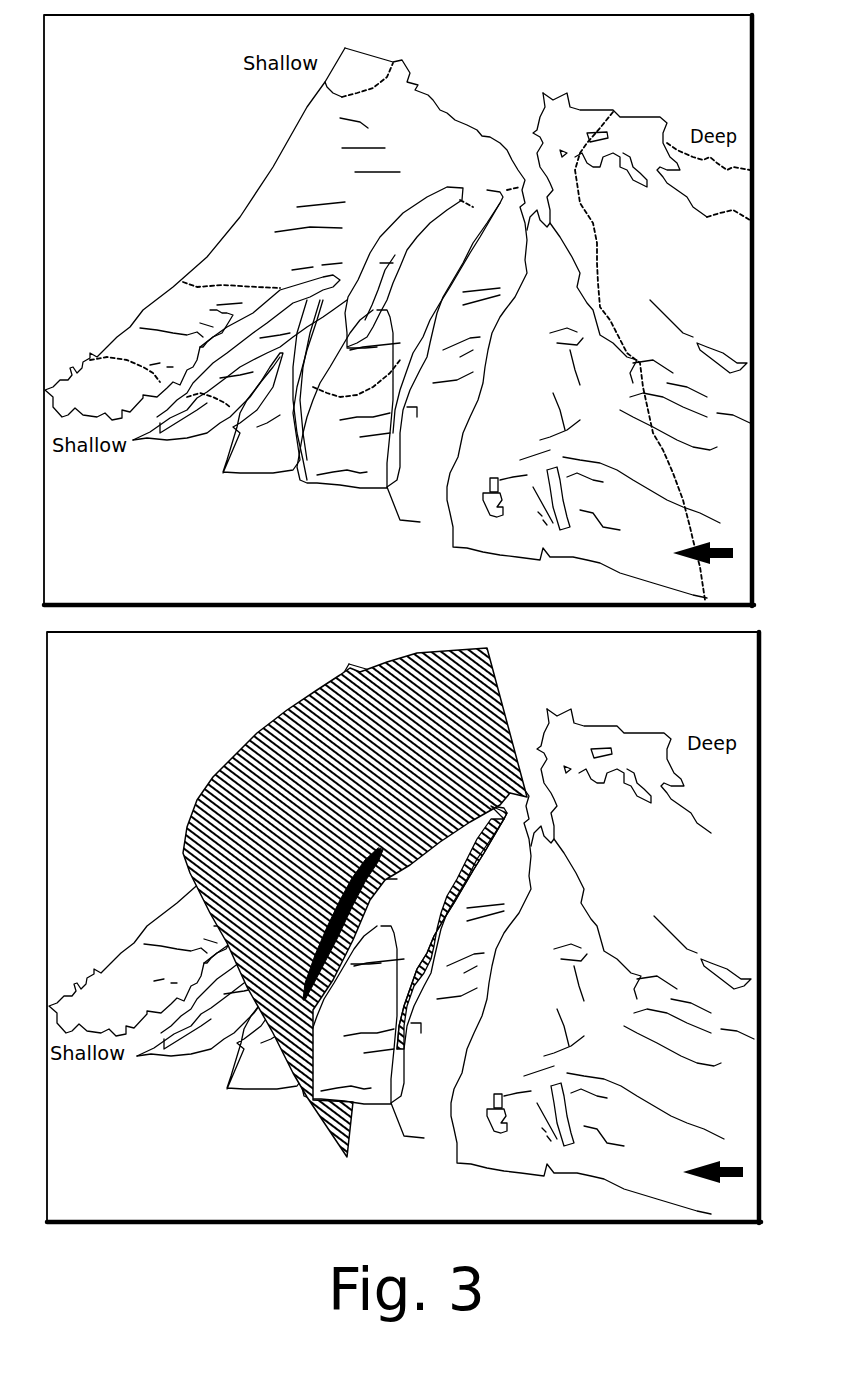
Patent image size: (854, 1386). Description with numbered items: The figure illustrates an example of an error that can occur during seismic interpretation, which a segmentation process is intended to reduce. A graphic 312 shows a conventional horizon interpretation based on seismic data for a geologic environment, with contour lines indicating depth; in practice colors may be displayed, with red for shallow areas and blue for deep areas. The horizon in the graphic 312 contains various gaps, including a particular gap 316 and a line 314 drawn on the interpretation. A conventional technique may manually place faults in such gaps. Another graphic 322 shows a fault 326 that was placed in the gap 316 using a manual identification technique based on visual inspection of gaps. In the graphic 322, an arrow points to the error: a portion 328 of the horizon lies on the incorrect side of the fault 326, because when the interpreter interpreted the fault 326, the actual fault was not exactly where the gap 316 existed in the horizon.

The graphic 312 is at (112, 53).
The fault / boundary line 314 is at (190, 273).
The gap 316 is at (379, 260).
The graphic 322 is at (99, 666).
The fault 326 is at (338, 902).
The portion of a horizon 328 is at (370, 878).